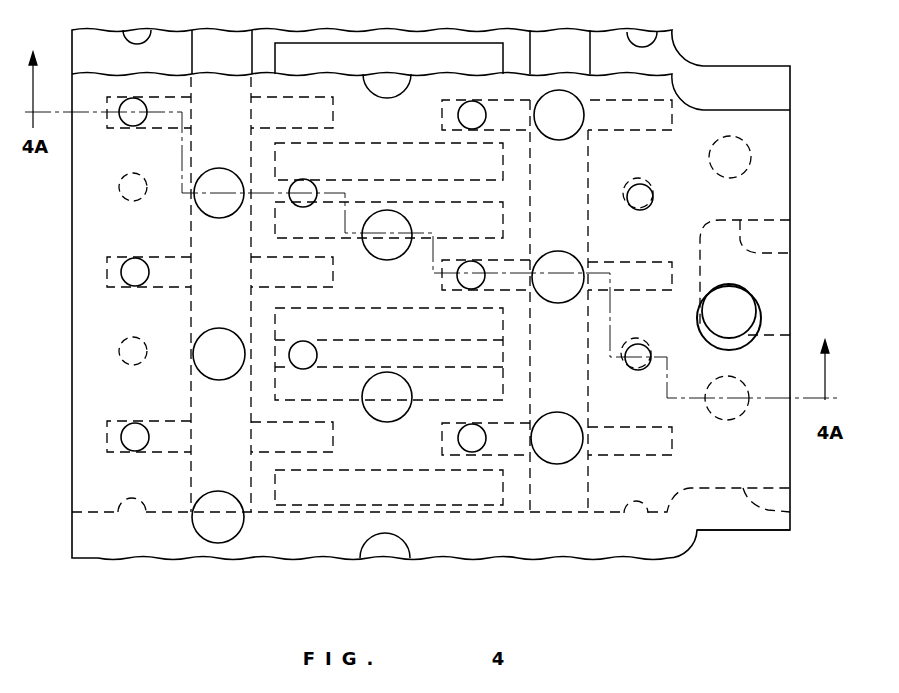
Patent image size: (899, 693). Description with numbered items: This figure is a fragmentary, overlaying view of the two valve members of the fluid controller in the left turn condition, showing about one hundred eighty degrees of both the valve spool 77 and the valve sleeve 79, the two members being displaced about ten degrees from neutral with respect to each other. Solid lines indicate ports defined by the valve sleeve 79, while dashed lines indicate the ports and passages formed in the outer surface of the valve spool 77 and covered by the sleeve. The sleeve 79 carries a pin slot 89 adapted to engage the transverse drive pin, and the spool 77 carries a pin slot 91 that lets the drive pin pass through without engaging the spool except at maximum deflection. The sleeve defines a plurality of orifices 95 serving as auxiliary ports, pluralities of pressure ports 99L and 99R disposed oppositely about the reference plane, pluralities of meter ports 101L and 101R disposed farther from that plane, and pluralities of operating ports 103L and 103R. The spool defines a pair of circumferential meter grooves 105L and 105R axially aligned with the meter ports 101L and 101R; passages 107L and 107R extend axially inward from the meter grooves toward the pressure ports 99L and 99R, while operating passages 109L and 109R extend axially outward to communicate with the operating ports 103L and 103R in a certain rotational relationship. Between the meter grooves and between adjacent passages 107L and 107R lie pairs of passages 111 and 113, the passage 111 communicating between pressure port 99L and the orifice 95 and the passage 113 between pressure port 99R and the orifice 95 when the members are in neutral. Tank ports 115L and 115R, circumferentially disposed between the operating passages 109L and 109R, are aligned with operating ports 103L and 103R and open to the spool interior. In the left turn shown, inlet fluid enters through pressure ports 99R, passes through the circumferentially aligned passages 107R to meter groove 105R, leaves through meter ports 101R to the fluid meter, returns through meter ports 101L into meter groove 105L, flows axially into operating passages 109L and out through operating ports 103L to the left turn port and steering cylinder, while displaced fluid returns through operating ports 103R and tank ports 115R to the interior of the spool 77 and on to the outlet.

The valve spool 77 is at (740, 67).
The valve sleeve 79 is at (718, 531).
The pin slot 89 is at (757, 318).
The pin slot 91 is at (790, 253).
The orifice 95 is at (382, 260).
The pressure port 99L is at (302, 343).
The pressure port 99R is at (470, 104).
The meter port 101L is at (217, 210).
The meter port 101R is at (561, 428).
The operating port 103L is at (128, 126).
The operating port 103R is at (637, 210).
The meter groove 105L is at (210, 97).
The meter groove 105R is at (580, 97).
The passage 107L is at (305, 113).
The passage 107R is at (455, 457).
The operating passage 109L is at (170, 272).
The operating passage 109R is at (680, 112).
The passage 111 is at (293, 50).
The passage 113 is at (389, 220).
The tank port 115L is at (122, 200).
The tank port 115R is at (630, 182).